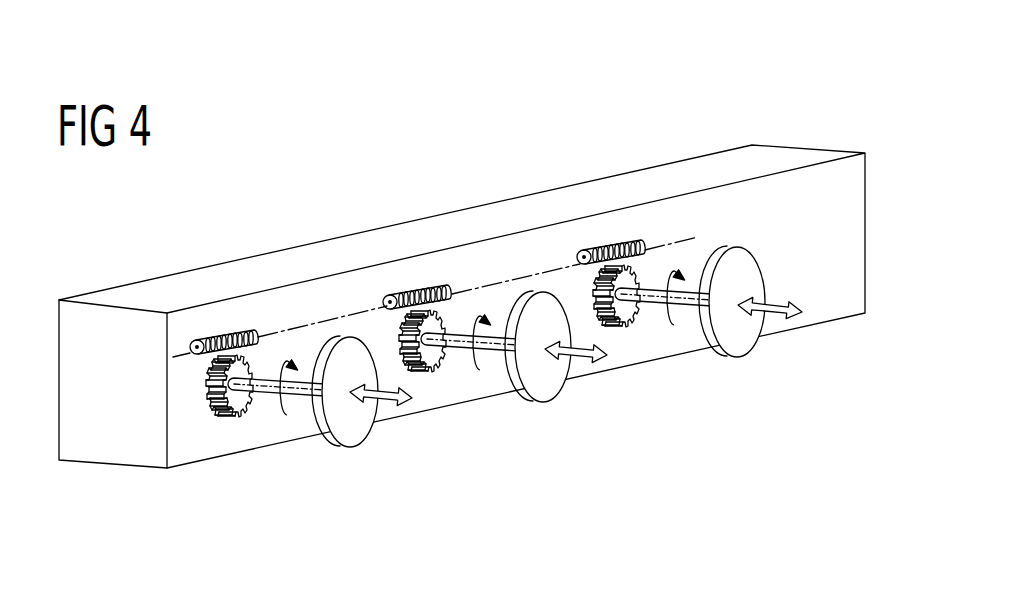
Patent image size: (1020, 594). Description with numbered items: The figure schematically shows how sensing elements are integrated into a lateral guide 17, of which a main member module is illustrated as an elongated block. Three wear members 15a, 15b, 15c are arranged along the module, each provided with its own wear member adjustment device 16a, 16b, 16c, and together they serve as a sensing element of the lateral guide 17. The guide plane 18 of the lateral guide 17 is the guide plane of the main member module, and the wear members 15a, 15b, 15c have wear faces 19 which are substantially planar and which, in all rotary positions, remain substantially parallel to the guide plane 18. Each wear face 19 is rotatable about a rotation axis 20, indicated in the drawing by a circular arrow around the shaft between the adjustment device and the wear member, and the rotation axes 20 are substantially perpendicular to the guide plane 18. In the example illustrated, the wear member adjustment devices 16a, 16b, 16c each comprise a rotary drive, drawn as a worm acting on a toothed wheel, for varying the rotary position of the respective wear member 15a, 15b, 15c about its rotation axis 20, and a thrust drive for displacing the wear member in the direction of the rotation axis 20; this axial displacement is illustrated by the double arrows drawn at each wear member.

The wear member 15a is at (347, 447).
The wear member 15b is at (540, 393).
The wear member 15c is at (733, 348).
The wear member adjustment device 16a is at (237, 417).
The wear member adjustment device 16b is at (433, 373).
The wear member adjustment device 16c is at (625, 330).
The lateral guide 17 is at (200, 283).
The guide plane 18 is at (187, 453).
The wear face 19 is at (553, 383).
The rotation axis 20 is at (297, 408).